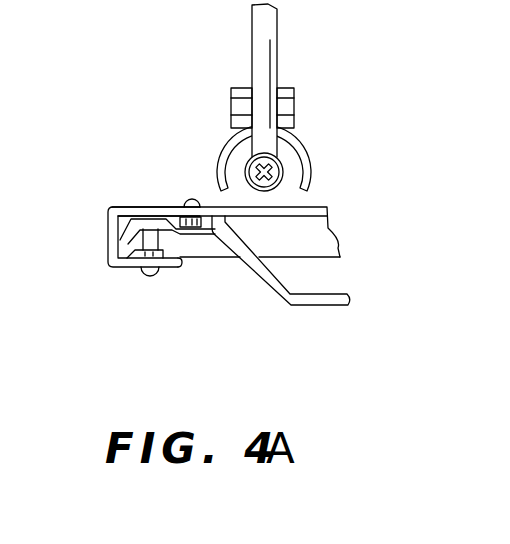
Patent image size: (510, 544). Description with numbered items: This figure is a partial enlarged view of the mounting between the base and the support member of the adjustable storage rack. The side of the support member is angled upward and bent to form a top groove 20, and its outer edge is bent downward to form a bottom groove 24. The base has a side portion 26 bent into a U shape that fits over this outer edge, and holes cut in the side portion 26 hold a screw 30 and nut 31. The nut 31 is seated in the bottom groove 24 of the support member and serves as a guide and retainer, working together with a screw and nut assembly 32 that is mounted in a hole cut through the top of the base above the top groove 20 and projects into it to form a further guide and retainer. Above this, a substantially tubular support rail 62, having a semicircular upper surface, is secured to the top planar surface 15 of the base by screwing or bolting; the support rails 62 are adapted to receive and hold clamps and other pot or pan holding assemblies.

The top planar surface 15 is at (315, 204).
The top groove 20 is at (213, 226).
The bottom groove 24 is at (145, 226).
The side portion 26 is at (106, 222).
The screw 30 is at (146, 277).
The nut 31 is at (110, 259).
The screw and nut assembly 32 is at (191, 199).
The support rail 62 is at (292, 160).